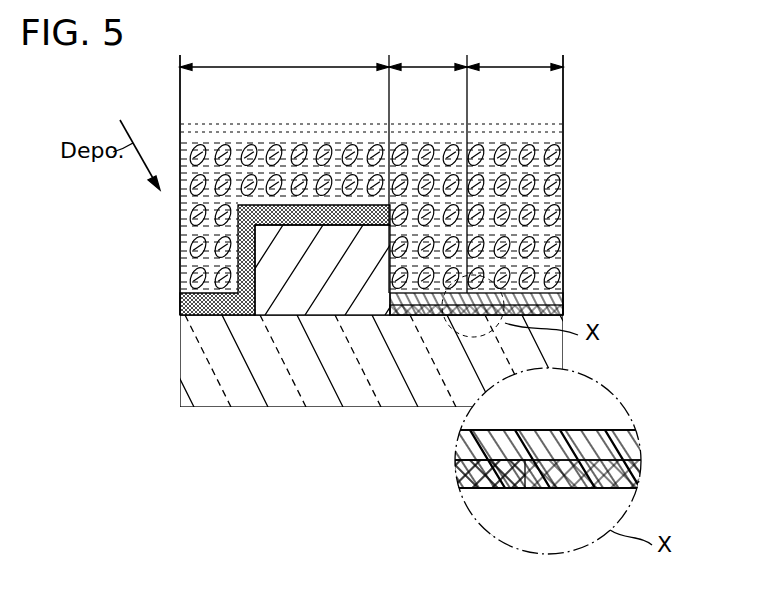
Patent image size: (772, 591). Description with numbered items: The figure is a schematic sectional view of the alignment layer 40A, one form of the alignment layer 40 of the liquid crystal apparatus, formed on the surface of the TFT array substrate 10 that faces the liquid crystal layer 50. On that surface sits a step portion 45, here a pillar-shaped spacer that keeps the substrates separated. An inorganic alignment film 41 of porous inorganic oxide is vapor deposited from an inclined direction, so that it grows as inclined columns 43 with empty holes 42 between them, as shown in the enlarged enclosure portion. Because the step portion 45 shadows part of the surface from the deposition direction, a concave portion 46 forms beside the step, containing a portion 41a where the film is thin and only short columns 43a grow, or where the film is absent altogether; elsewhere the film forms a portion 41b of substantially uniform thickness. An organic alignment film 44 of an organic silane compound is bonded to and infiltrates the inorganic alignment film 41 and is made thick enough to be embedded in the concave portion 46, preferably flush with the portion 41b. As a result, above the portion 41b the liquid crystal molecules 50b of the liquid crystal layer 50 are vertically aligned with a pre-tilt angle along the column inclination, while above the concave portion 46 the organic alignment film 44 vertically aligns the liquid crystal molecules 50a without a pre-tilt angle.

The TFT array substrate 10 is at (186, 375).
The alignment layer 40 is at (585, 277).
The alignment layer 40A is at (448, 185).
The inorganic alignment film 41 is at (165, 303).
The portion where thickness of inorganic alignment film is reduced 41a is at (428, 58).
The portion of uniform thickness 41b is at (371, 58).
The empty hole 42 is at (558, 428).
The column 43 is at (592, 433).
The short column 43a is at (463, 468).
The organic alignment film 44 is at (400, 302).
The step portion 45 is at (270, 300).
The concave portion 46 is at (393, 283).
The liquid crystal layer 50 is at (590, 180).
The liquid crystal molecule 50a is at (428, 147).
The liquid crystal molecule 50b is at (272, 147).